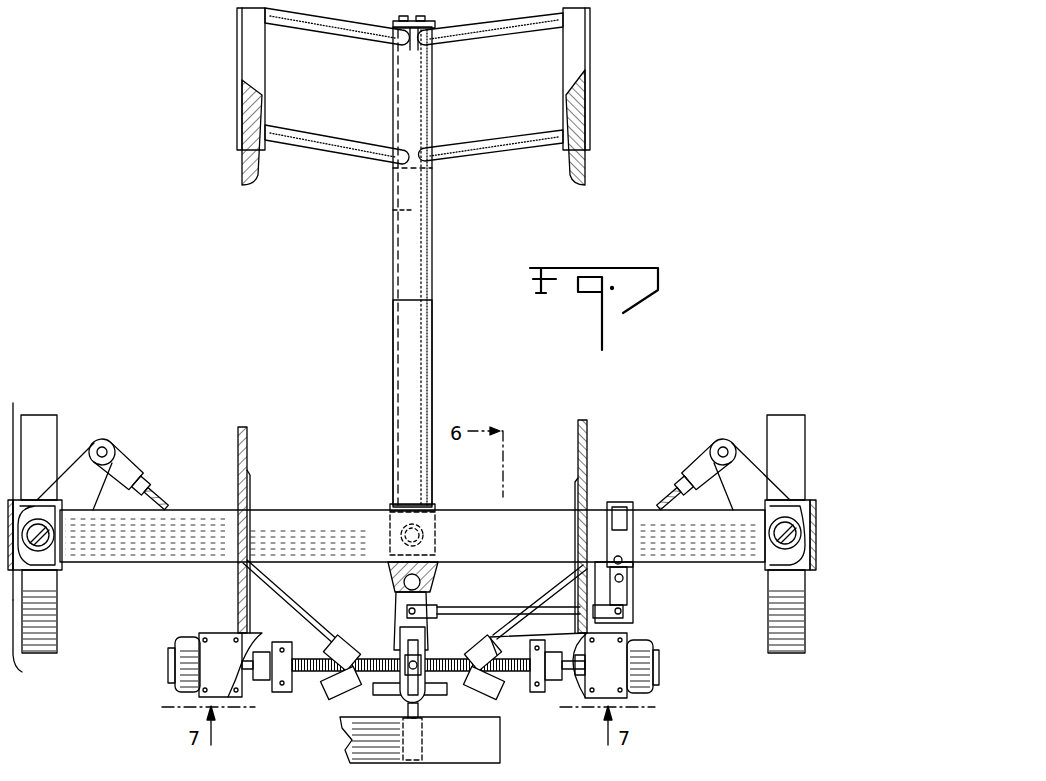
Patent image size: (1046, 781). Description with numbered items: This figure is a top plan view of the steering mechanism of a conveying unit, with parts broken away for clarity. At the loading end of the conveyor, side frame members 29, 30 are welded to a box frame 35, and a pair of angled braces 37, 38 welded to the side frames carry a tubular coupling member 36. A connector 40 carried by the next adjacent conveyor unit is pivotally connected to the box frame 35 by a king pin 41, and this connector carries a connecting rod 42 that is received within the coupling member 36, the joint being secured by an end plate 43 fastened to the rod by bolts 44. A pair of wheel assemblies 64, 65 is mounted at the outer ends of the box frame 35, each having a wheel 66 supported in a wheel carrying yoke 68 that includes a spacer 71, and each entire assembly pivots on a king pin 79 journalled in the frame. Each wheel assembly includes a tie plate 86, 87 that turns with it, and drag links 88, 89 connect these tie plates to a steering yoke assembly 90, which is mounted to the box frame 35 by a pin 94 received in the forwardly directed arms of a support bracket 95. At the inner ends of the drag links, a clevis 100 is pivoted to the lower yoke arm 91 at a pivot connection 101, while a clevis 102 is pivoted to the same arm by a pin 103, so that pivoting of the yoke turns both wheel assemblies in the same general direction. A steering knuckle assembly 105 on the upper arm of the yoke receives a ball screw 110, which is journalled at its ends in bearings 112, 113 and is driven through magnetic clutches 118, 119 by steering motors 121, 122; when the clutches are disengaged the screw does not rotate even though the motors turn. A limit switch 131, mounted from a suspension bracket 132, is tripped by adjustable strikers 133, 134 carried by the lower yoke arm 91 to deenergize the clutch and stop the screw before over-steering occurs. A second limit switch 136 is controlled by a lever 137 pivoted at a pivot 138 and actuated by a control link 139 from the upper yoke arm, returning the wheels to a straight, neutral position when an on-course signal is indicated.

The side frame member 29 is at (585, 180).
The side frame member 30 is at (245, 175).
The box frame 35 is at (275, 515).
The tubular coupling member 36 is at (451, 291).
The angled brace 37 is at (335, 35).
The angled brace 38 is at (540, 18).
The connector 40 is at (432, 340).
The king pin 41 is at (425, 525).
The connecting rod 42 is at (418, 222).
The end plate 43 is at (407, 16).
The bolts 44 is at (400, 16).
The wheel assembly 64 is at (717, 456).
The wheel assembly 65 is at (108, 518).
The wheel 66 is at (57, 640).
The wheel carrying yoke 68 is at (35, 442).
The spacer 71 is at (32, 544).
The king pin 79 is at (46, 540).
The tie plate 86 is at (123, 455).
The tie plate 87 is at (704, 457).
The drag link 88 is at (165, 495).
The drag link 89 is at (660, 498).
The steering yoke assembly 90 is at (426, 600).
The lower yoke arm 91 is at (421, 693).
The pin 94 is at (425, 582).
The support bracket 95 is at (396, 606).
The clevis 100 is at (358, 640).
The pivot connection 101 is at (362, 688).
The clevis 102 is at (470, 648).
The pin 103 is at (462, 690).
The steering knuckle assembly 105 is at (249, 770).
The ball screw 110 is at (322, 652).
The bearing 112 is at (282, 693).
The bearing 113 is at (540, 688).
The magnetic clutch 118 is at (262, 640).
The magnetic clutch 119 is at (577, 645).
The steering motor 121 is at (175, 668).
The steering motor 122 is at (655, 668).
The limit switch 131 is at (420, 700).
The suspension bracket 132 is at (480, 749).
The striker 133 is at (262, 682).
The striker 134 is at (505, 700).
The limit switch 136 is at (644, 565).
The lever 137 is at (623, 606).
The pivot 138 is at (627, 578).
The control link 139 is at (415, 602).